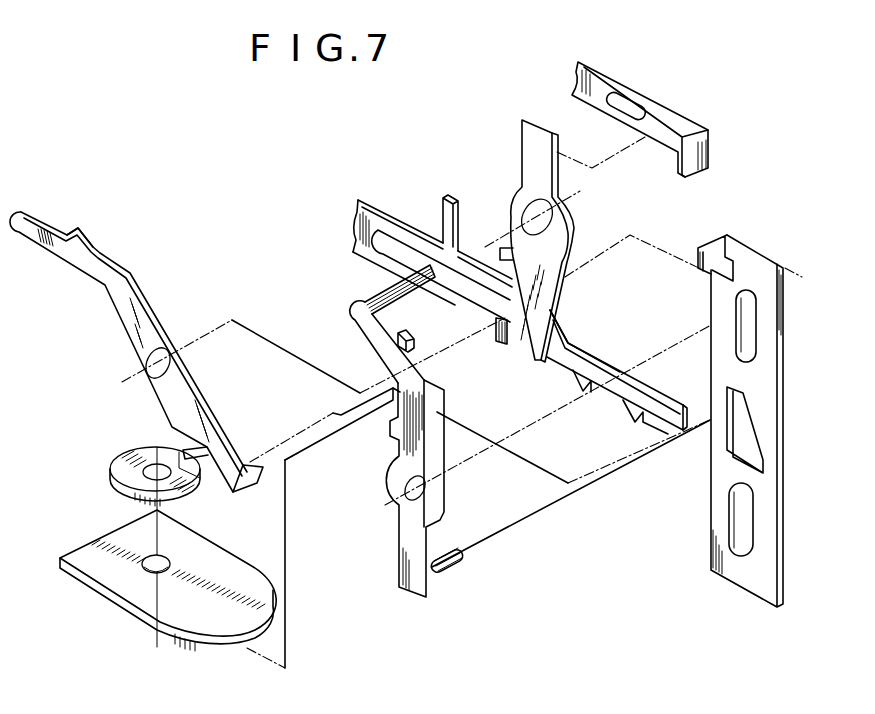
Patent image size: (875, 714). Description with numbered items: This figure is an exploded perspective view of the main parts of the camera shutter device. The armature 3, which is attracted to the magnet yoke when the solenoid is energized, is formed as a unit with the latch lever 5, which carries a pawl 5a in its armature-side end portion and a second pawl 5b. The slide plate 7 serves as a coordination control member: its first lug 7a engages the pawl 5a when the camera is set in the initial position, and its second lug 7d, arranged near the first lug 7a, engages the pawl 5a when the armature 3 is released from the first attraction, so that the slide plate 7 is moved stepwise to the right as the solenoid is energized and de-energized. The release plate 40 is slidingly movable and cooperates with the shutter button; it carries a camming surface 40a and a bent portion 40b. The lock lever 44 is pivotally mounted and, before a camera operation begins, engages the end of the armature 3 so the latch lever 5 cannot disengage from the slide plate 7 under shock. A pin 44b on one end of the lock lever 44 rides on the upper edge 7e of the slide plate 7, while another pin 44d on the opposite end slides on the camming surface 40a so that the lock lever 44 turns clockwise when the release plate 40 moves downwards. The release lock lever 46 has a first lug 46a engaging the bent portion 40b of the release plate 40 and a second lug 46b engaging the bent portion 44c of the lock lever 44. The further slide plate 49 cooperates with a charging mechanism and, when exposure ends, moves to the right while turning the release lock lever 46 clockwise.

The armature 3 is at (215, 567).
The latch lever 5 is at (110, 274).
The pawl 5a is at (250, 484).
The second pawl 5b is at (94, 248).
The slide plate 7 is at (375, 203).
The first lug 7a is at (623, 407).
The second lug 7d is at (572, 380).
The upper edge 7e is at (583, 345).
The release plate 40 is at (747, 257).
The camming surface 40a is at (753, 423).
The bent portion 40b is at (712, 238).
The lock lever 44 is at (418, 470).
The pin 44b is at (378, 288).
The bent portion 44c is at (424, 329).
The pin 44d is at (452, 580).
The release lock lever 46 is at (560, 227).
The first lug 46a is at (500, 345).
The second lug 46b is at (510, 247).
The slide plate 49 is at (657, 112).